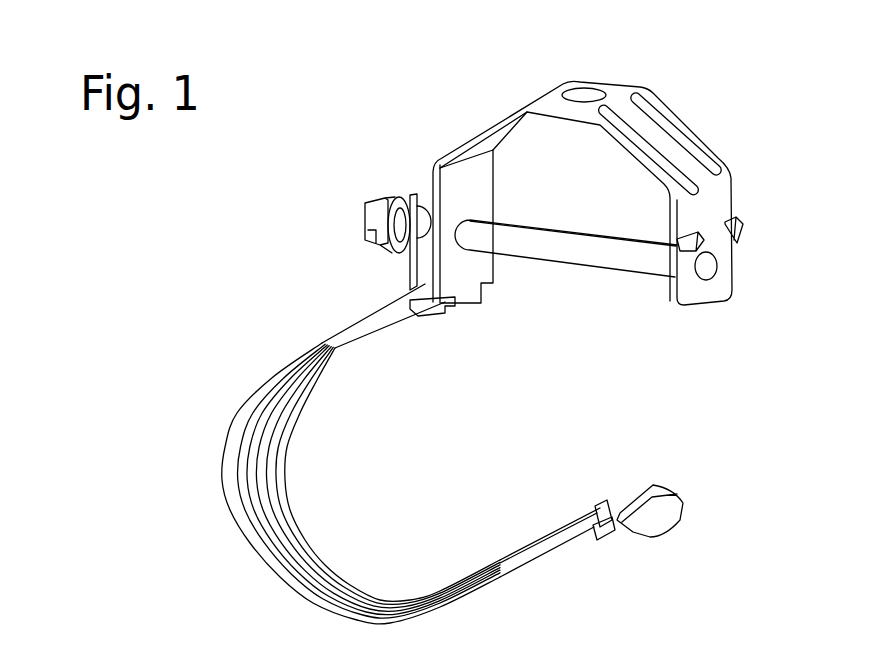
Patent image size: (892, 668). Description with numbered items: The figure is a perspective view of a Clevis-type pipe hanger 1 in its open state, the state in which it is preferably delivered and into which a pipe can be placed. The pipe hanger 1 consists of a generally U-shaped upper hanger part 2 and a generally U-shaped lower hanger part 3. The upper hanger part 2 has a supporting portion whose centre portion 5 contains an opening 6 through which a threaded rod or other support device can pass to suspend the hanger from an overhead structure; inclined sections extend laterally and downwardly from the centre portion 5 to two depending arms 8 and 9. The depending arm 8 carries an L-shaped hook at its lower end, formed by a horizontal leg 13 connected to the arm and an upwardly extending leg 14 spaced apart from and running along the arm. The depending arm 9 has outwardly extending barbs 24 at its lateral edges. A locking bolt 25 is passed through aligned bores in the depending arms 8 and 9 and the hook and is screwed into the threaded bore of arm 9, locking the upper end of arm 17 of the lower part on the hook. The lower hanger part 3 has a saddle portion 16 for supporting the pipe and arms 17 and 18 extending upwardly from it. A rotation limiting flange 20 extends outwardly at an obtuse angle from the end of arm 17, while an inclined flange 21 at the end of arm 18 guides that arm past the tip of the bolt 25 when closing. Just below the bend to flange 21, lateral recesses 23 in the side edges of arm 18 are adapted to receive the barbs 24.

The pipe hanger 1 is at (352, 226).
The upper hanger part 2 is at (690, 119).
The lower hanger part 3 is at (370, 453).
The centre portion 5 is at (616, 90).
The opening 6 is at (583, 90).
The depending arm 8 is at (470, 266).
The depending arm 9 is at (707, 205).
The horizontal leg 13 is at (437, 312).
The upwardly extending leg 14 is at (422, 202).
The saddle portion 16 is at (258, 550).
The arm 17 is at (347, 327).
The arm 18 is at (525, 556).
The flange 20 is at (423, 270).
The flange 21 is at (662, 502).
The lateral recesses 23 is at (600, 509).
The barbs 24 is at (745, 230).
The locking bolt 25 is at (597, 258).